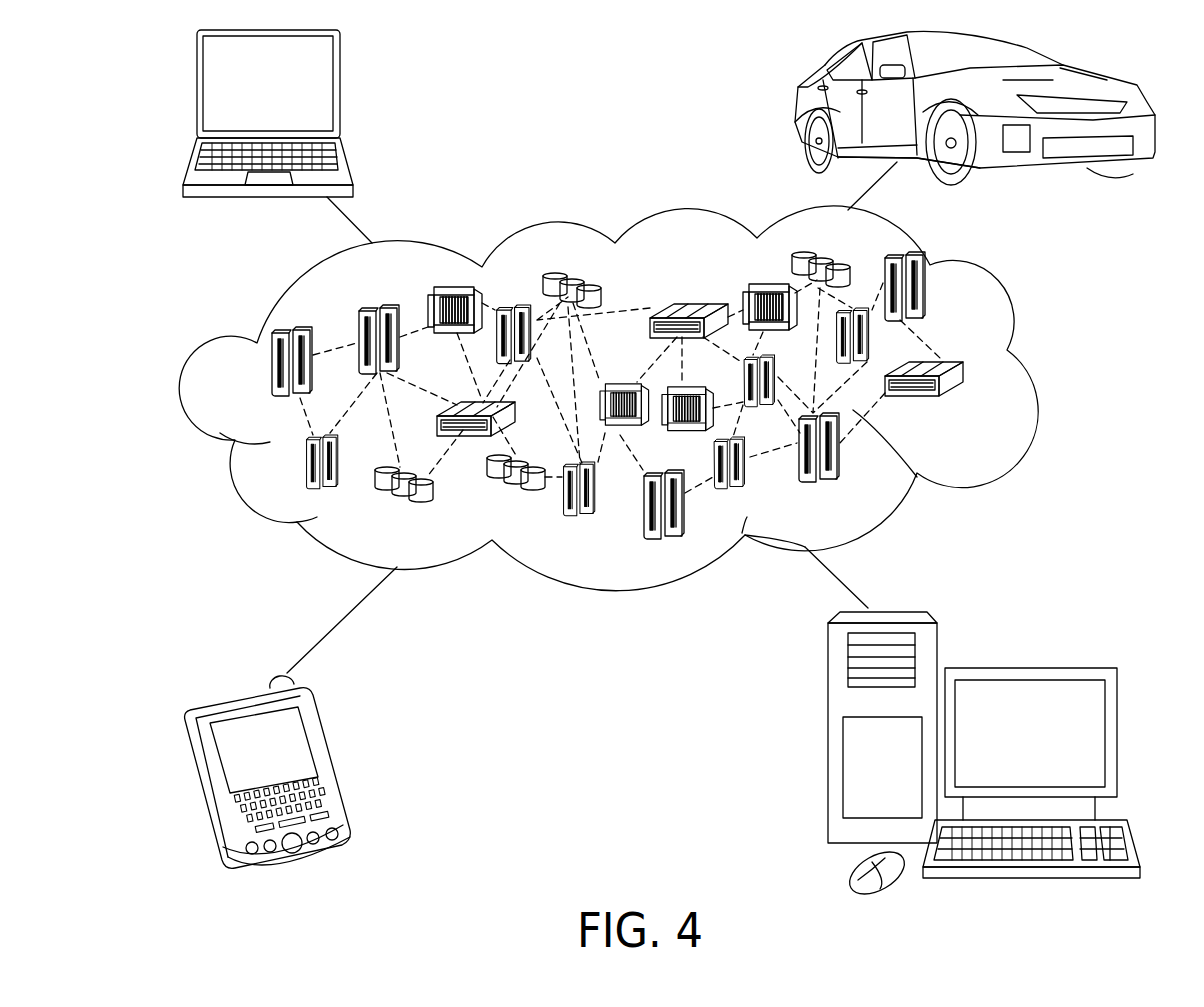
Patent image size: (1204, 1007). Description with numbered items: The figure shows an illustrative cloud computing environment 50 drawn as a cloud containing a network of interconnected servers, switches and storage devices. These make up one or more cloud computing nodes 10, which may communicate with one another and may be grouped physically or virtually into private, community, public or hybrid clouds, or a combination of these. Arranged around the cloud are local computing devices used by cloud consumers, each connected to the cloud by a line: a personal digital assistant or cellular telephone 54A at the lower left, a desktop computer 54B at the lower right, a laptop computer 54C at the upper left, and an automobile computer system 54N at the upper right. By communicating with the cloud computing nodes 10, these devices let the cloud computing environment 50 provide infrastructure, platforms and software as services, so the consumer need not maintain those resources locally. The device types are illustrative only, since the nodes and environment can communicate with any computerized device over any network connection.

The cloud computing nodes 10 is at (972, 405).
The cloud computing environment 50 is at (1028, 372).
The personal digital assistant (PDA) or cellular telephone 54A is at (332, 763).
The desktop computer 54B is at (1030, 667).
The laptop computer 54C is at (343, 95).
The automobile computer system 54N is at (800, 110).